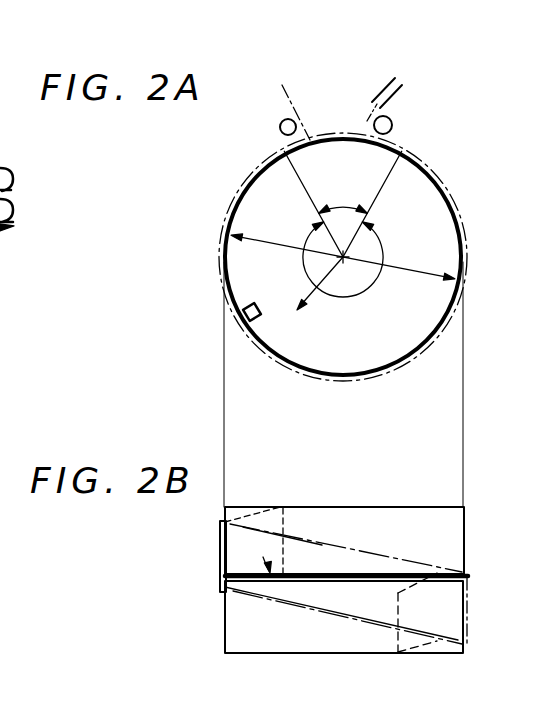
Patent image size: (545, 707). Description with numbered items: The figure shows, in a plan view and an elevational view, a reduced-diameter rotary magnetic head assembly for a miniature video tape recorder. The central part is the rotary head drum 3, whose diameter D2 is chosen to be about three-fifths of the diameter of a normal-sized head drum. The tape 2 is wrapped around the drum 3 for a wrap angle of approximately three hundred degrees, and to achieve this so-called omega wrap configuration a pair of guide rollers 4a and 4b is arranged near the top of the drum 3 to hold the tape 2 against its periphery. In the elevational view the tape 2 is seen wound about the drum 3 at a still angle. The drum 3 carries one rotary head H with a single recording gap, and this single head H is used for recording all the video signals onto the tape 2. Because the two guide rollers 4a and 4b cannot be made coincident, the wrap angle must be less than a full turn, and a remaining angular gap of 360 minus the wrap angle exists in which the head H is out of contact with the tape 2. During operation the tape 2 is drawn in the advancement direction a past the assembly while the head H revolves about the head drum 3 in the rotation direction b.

In FIG. 2A, the tape 2 is at (437, 343).
In FIG. 2B, the tape 2 is at (455, 566).
In FIG. 2A, the rotary head drum 3 is at (340, 130).
In FIG. 2B, the rotary head drum 3 is at (343, 507).
In FIG. 2A, the guide roller 4a is at (279, 128).
In FIG. 2A, the guide roller 4b is at (393, 124).
In FIG. 2A, the advancement direction a is at (374, 96).
In FIG. 2A, the rotation direction b is at (276, 292).
In FIG. 2A, the rotary head H is at (264, 320).
In FIG. 2B, the rotary head H is at (225, 593).
In FIG. 2A, the diameter of the reduced-diameter head drum D2 is at (343, 270).
In FIG. 2A, the gap of 360°-α 360 is at (336, 206).